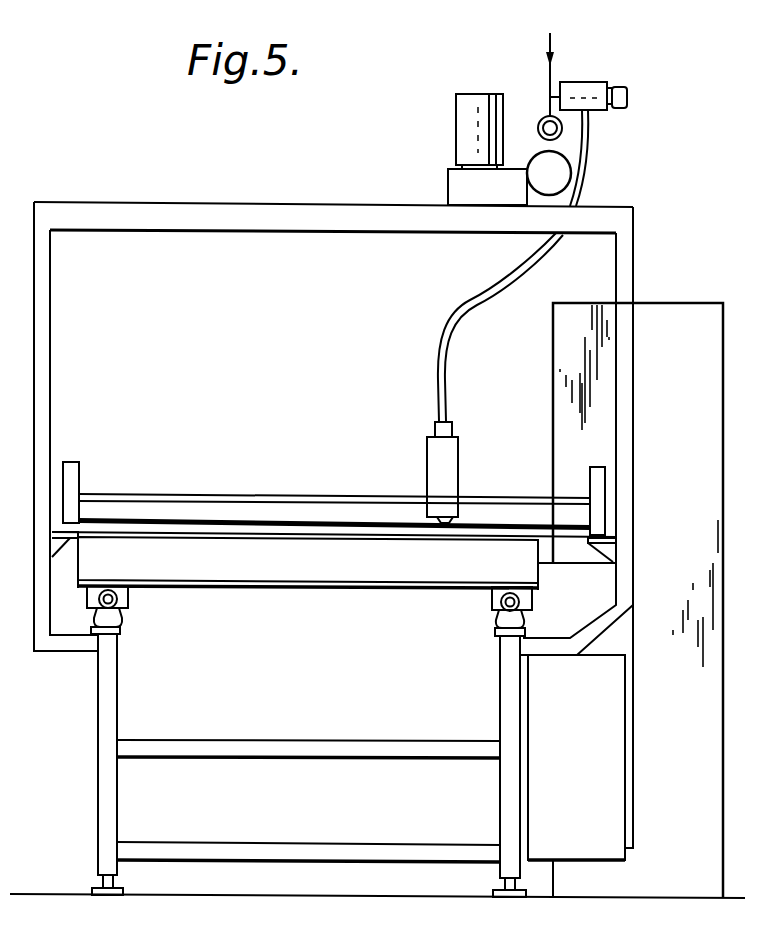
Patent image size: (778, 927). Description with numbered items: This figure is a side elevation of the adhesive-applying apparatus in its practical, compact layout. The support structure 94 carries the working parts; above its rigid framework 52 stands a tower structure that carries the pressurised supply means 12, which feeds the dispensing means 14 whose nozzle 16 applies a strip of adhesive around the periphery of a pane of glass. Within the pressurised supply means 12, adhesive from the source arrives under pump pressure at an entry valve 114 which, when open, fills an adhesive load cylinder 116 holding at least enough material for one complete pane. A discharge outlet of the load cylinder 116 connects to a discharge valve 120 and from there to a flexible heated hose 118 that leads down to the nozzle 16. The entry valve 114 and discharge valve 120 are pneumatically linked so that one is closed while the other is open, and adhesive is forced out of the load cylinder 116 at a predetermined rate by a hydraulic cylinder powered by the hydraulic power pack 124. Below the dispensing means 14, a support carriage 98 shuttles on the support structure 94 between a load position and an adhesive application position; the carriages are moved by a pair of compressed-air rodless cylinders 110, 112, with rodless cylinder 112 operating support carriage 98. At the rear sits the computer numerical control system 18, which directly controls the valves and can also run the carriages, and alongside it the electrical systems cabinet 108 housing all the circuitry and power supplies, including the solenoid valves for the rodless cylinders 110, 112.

The pressurised supply means 12 is at (436, 128).
The hydraulic power pack 124 is at (450, 147).
The entry valve 114 is at (563, 135).
The adhesive load cylinder 116 is at (556, 181).
The discharge valve 120 is at (590, 88).
The flexible heated hose 118 is at (476, 296).
The dispensing means 14 is at (463, 416).
The nozzle 16 is at (448, 520).
The rigid framework 52 is at (314, 515).
The support carriage 98 is at (347, 574).
The rodless cylinder 110 is at (113, 600).
The rodless cylinder 112 is at (492, 603).
The support structure 94 is at (97, 710).
The electrical systems cabinet 108 is at (546, 691).
The computer numerical control system 18 is at (683, 340).